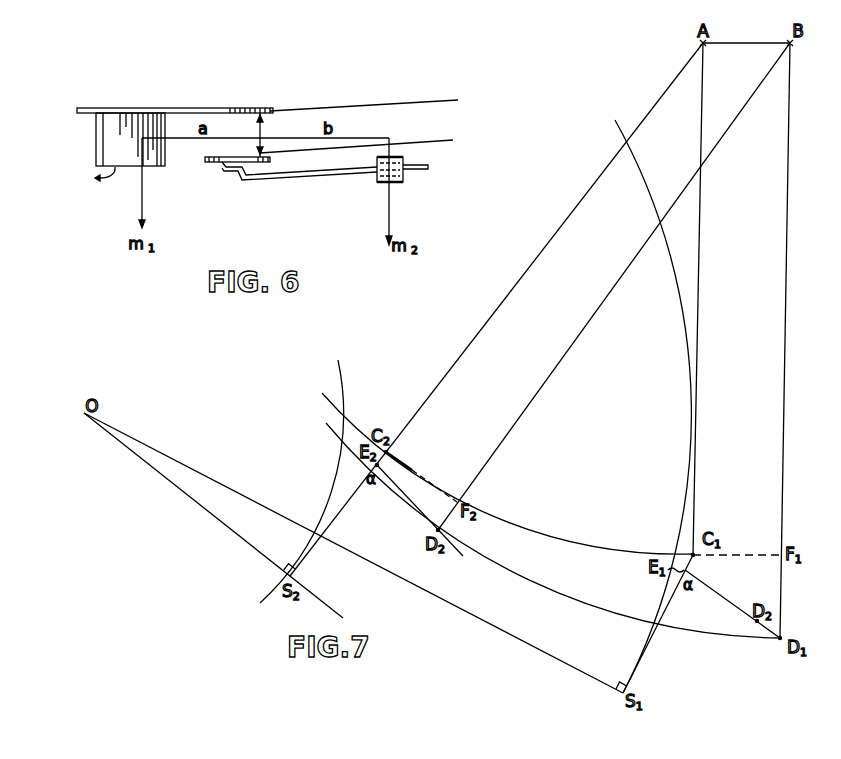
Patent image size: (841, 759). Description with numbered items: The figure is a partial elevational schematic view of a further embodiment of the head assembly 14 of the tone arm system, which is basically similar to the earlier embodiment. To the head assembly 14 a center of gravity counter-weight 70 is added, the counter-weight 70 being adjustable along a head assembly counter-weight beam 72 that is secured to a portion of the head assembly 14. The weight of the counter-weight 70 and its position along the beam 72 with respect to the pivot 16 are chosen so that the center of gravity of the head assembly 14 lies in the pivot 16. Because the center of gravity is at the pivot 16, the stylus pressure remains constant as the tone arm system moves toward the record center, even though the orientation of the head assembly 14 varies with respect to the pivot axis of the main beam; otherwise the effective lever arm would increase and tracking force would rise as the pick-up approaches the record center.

The head assembly 14 is at (160, 110).
The pivot 16 is at (264, 131).
The center of gravity counter-weight 70 is at (407, 178).
The head assembly counter-weight beam 72 is at (318, 176).